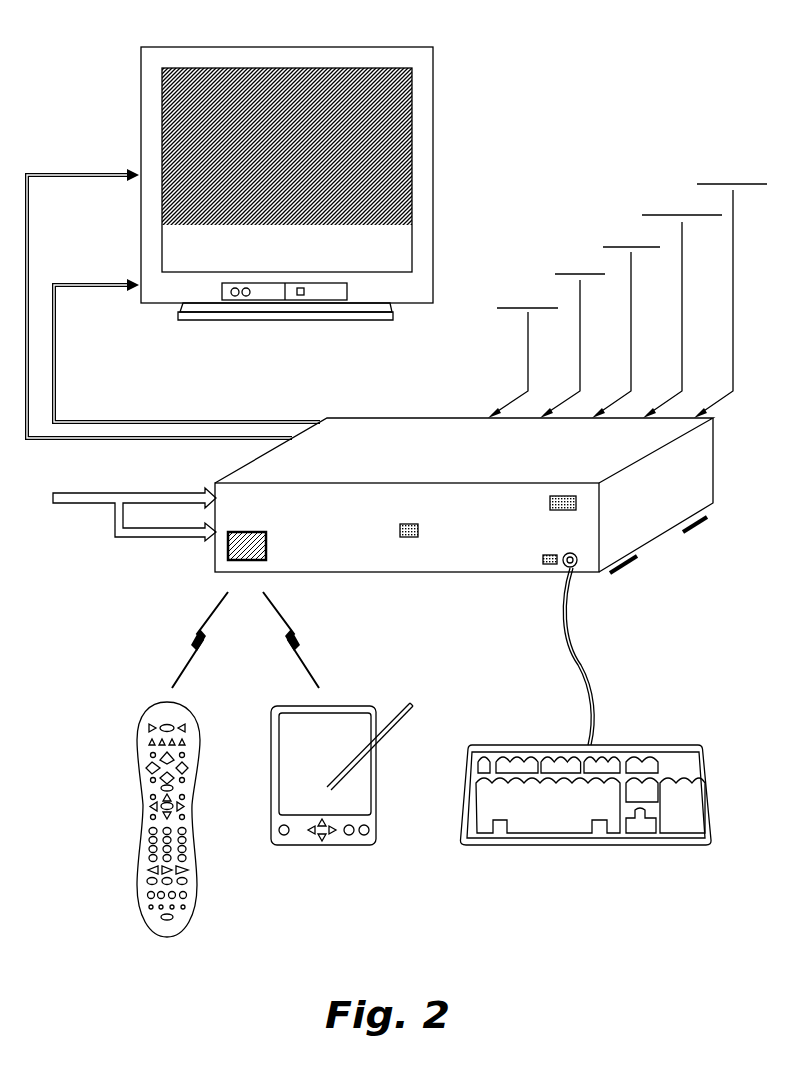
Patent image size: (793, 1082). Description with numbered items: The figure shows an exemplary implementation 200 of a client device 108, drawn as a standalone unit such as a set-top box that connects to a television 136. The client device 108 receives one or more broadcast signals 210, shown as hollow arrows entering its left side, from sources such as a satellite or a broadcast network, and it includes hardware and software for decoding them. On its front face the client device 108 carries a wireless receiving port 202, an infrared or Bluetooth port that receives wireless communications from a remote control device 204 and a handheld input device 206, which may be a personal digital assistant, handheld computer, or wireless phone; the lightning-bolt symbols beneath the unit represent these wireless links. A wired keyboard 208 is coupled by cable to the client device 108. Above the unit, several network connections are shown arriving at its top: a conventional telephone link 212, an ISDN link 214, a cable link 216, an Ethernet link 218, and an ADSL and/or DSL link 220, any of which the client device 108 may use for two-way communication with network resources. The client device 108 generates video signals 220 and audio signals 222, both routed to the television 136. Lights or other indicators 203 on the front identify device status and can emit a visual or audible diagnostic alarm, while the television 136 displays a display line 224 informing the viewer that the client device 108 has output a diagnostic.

The exemplary implementation 200 is at (677, 44).
The client device 108 is at (384, 418).
The television 136 is at (426, 299).
The display line 224 is at (416, 243).
The ADSL and/or DSL link 220 is at (105, 204).
The audio signals 222 is at (105, 317).
The telephone link 212 is at (528, 273).
The ISDN link 214 is at (582, 240).
The cable link 216 is at (632, 210).
The Ethernet link 218 is at (683, 178).
The wireless receiving port 202 is at (259, 530).
The lights or other indicators 203 is at (418, 524).
The broadcast signals 210 is at (100, 504).
The remote control device 204 is at (139, 718).
The handheld input device 206 is at (340, 706).
The wired keyboard 208 is at (628, 745).